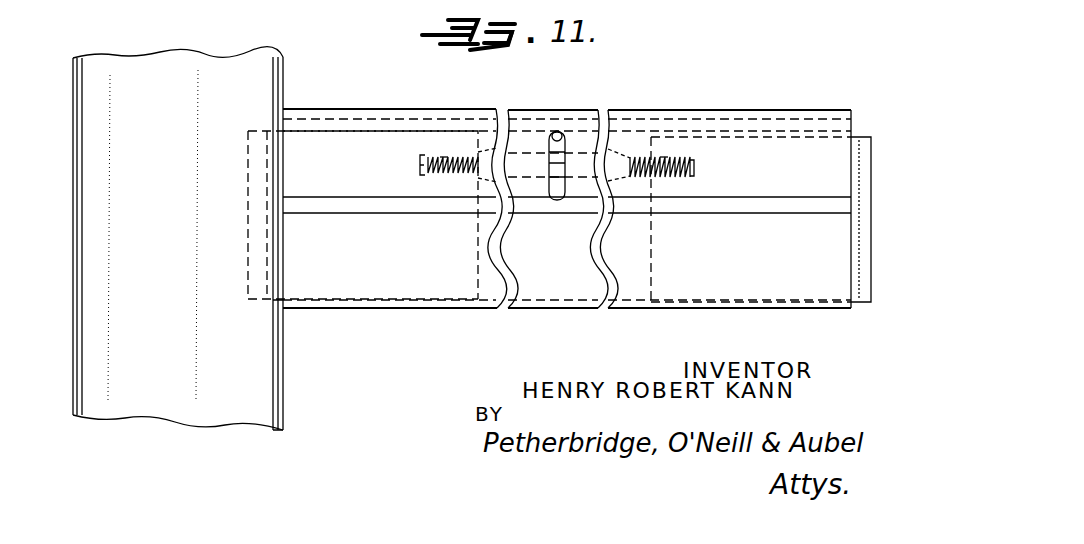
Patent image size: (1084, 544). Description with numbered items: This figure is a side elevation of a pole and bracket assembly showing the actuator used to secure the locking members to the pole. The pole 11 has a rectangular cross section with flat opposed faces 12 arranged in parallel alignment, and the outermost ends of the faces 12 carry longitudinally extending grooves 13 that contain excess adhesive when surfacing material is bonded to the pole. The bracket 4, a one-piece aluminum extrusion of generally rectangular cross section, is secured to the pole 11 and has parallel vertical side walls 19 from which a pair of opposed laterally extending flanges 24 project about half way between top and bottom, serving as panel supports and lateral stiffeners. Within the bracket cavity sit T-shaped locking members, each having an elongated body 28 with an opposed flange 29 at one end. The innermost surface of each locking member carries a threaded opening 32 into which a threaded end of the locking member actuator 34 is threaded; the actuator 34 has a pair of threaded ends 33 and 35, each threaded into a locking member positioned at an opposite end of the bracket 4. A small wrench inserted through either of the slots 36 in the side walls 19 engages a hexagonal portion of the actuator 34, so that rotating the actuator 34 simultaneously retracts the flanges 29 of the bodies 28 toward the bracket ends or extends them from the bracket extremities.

The bracket 4 is at (636, 312).
The pole 11 is at (175, 102).
The opposed faces 12 is at (144, 410).
The longitudinally extending grooves 13 is at (277, 432).
The side walls 19 is at (545, 290).
The flanges 24 is at (797, 212).
The elongated body 28 is at (321, 282).
The flange 29 is at (256, 200).
The threaded opening 32 is at (420, 163).
The threaded end 33 is at (443, 157).
The locking member actuator 34 is at (550, 153).
The threaded end 35 is at (664, 165).
The slots 36 is at (558, 131).